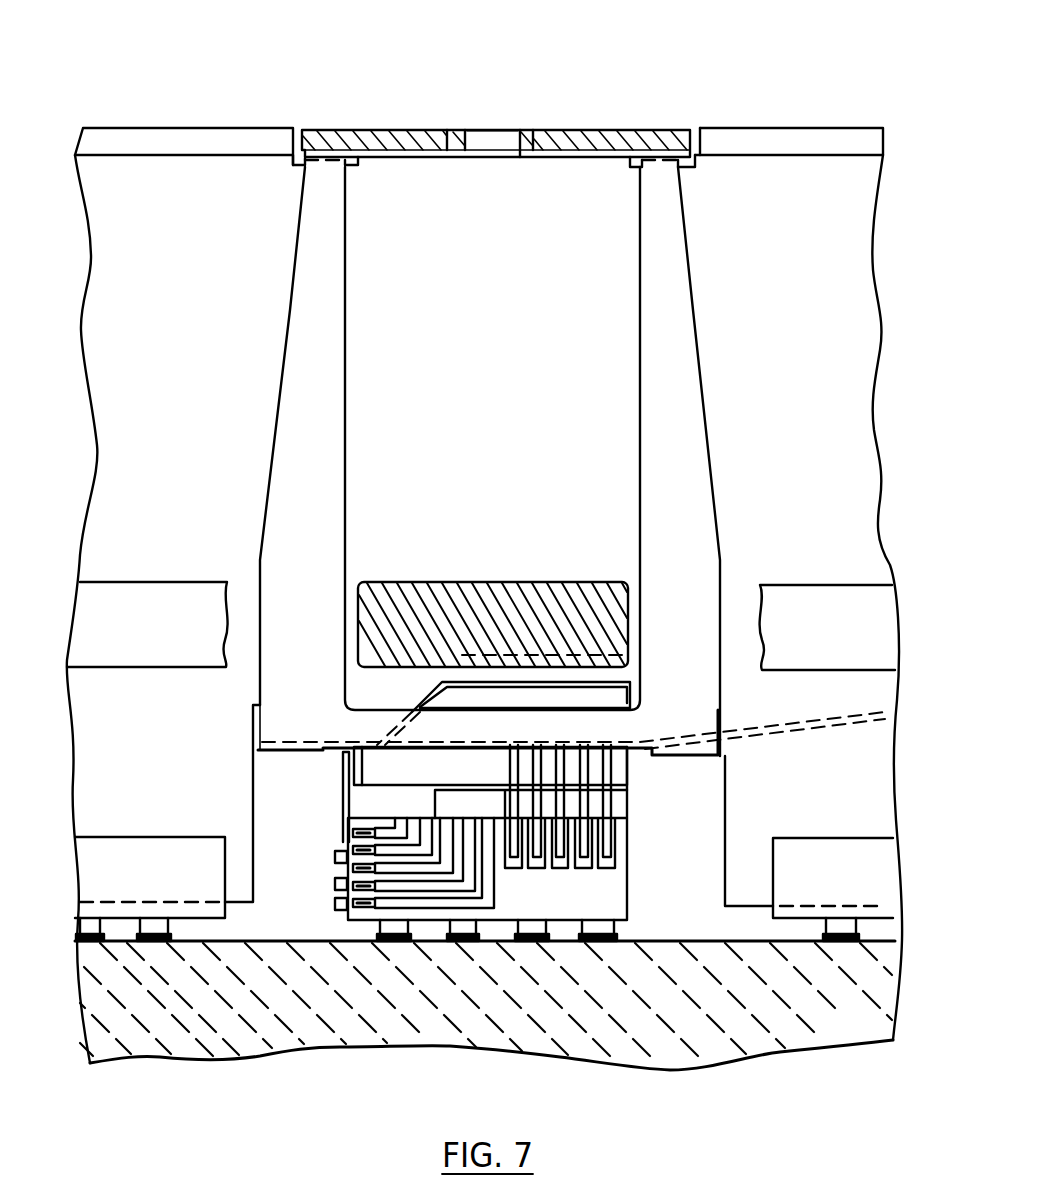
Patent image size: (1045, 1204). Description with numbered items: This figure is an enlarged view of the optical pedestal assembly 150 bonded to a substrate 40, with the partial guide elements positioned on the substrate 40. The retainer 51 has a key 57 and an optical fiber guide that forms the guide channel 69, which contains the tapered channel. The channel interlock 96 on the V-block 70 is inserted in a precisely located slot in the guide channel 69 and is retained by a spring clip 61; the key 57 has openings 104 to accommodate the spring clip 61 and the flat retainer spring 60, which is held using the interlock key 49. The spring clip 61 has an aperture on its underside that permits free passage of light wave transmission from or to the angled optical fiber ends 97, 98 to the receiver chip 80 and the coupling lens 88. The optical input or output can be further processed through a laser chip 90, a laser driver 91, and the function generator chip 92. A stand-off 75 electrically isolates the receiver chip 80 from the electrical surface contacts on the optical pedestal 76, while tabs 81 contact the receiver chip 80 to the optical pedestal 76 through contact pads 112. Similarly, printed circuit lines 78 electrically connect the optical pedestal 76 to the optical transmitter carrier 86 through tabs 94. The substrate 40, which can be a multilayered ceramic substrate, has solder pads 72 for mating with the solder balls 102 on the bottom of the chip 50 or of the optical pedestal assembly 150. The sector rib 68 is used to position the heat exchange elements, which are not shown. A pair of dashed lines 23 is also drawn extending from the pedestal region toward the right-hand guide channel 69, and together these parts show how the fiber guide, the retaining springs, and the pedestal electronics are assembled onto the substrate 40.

The dashed trace lines 23 is at (812, 733).
The substrate 40 is at (510, 1045).
The interlock key 49 is at (487, 152).
The chip 50 is at (137, 891).
The retainer 51 is at (158, 634).
The key 57 is at (763, 140).
The flat retainer spring 60 is at (583, 130).
The spring clip 61 is at (682, 385).
The sector rib 68 is at (473, 592).
The guide channel 69 is at (206, 359).
The V-block 70 is at (613, 706).
The solder pads 72 is at (453, 944).
The stand-off 75 is at (490, 815).
The optical pedestal 76 is at (623, 882).
The printed circuit lines 78 is at (493, 898).
The receiver chip 80 is at (428, 781).
The tabs 81 is at (510, 773).
The optical transmitter carrier 86 is at (335, 860).
The coupling lens 88 is at (343, 798).
The laser chip 90 is at (338, 853).
The laser driver 91 is at (335, 884).
The function generator chip 92 is at (335, 903).
The tabs 94 is at (359, 910).
The channel interlock 96 is at (612, 668).
The angled optical fiber end 97 is at (328, 745).
The angled optical fiber end 98 is at (383, 746).
The solder balls 102 is at (157, 944).
The openings 104 is at (299, 130).
The contact pads 112 is at (609, 869).
The optical pedestal assembly 150 is at (305, 952).